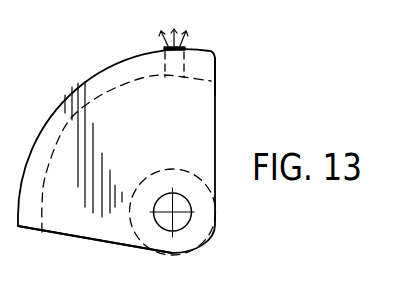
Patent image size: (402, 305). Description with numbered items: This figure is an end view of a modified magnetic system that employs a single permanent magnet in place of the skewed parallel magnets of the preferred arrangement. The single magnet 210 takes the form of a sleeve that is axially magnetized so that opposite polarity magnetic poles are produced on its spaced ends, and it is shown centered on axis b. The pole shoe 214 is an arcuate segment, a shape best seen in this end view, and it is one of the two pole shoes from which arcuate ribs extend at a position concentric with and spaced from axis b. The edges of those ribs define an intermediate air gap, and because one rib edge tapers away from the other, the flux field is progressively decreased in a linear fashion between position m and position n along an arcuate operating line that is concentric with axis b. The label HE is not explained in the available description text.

The pole shoe 214 is at (197, 133).
The single magnet 210 is at (134, 226).
The heating element HE is at (189, 49).
The position m is at (210, 67).
The position n is at (33, 227).
The axis b is at (172, 212).